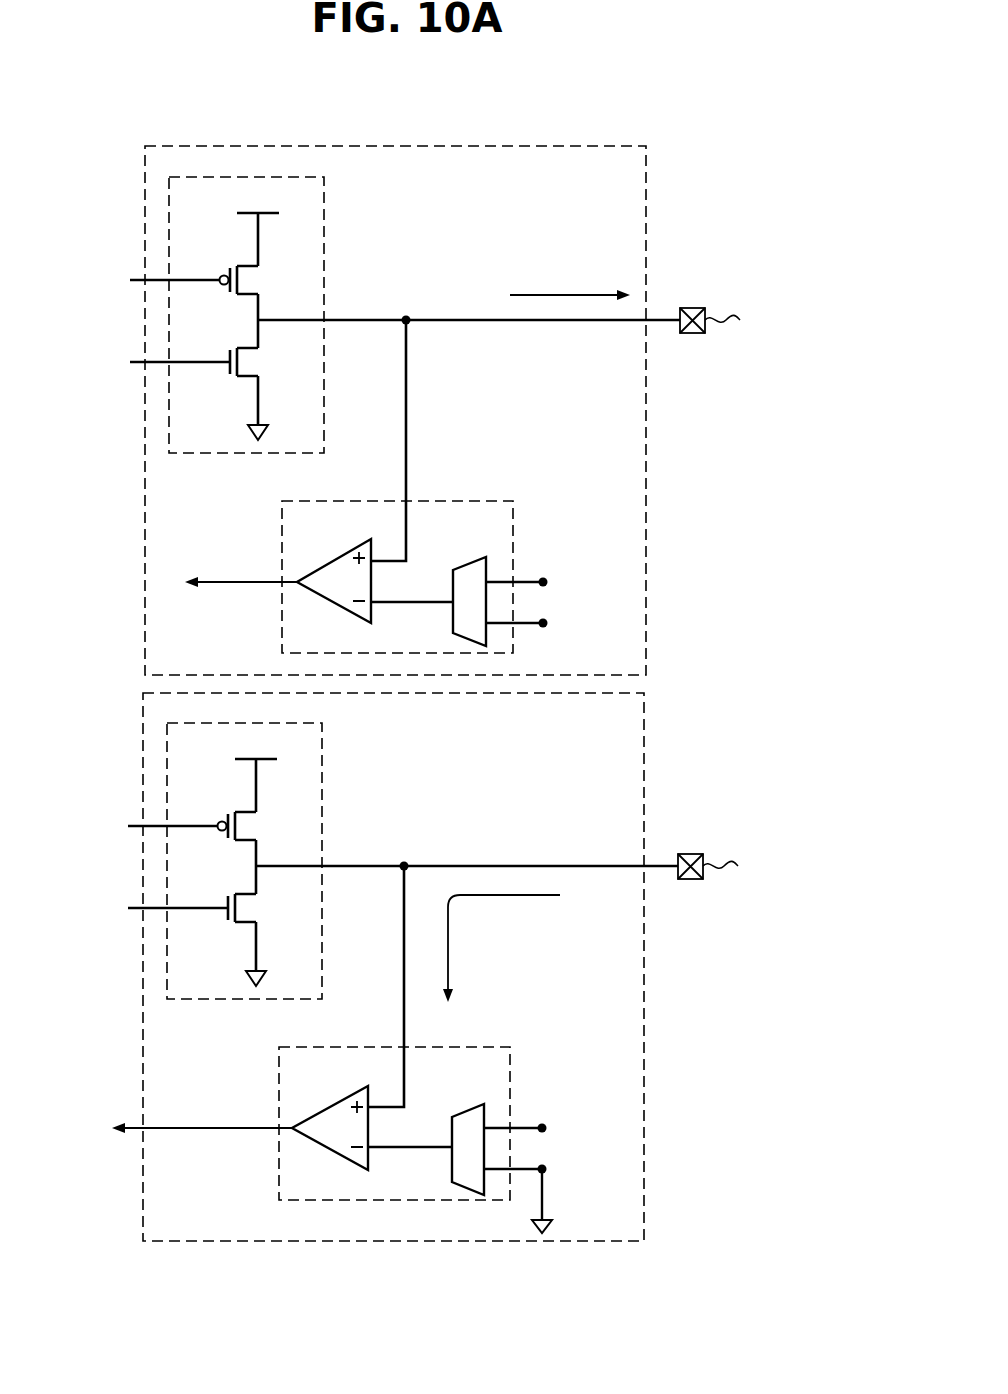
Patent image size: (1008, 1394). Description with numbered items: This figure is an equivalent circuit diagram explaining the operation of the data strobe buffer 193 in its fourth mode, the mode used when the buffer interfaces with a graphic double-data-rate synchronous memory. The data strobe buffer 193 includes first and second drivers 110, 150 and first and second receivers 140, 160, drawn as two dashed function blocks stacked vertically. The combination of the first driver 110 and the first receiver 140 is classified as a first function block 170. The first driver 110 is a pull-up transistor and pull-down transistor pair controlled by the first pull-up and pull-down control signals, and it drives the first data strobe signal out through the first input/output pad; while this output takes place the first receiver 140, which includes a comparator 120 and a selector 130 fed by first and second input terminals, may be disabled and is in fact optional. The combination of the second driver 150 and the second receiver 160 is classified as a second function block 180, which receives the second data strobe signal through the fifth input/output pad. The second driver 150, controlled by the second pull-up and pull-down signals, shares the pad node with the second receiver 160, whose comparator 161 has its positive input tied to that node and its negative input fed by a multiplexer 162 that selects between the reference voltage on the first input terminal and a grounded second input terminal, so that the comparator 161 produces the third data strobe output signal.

The data strobe buffer 193 is at (672, 114).
The first function block 170 is at (646, 203).
The first driver 110 is at (324, 233).
The first receiver 140 is at (482, 501).
The comparator 120 is at (331, 562).
The selector 130 is at (459, 568).
The second function block 180 is at (644, 755).
The second driver 150 is at (322, 779).
The second receiver 160 is at (478, 1047).
The comparator 161 is at (325, 1109).
The multiplexer 162 is at (454, 1115).